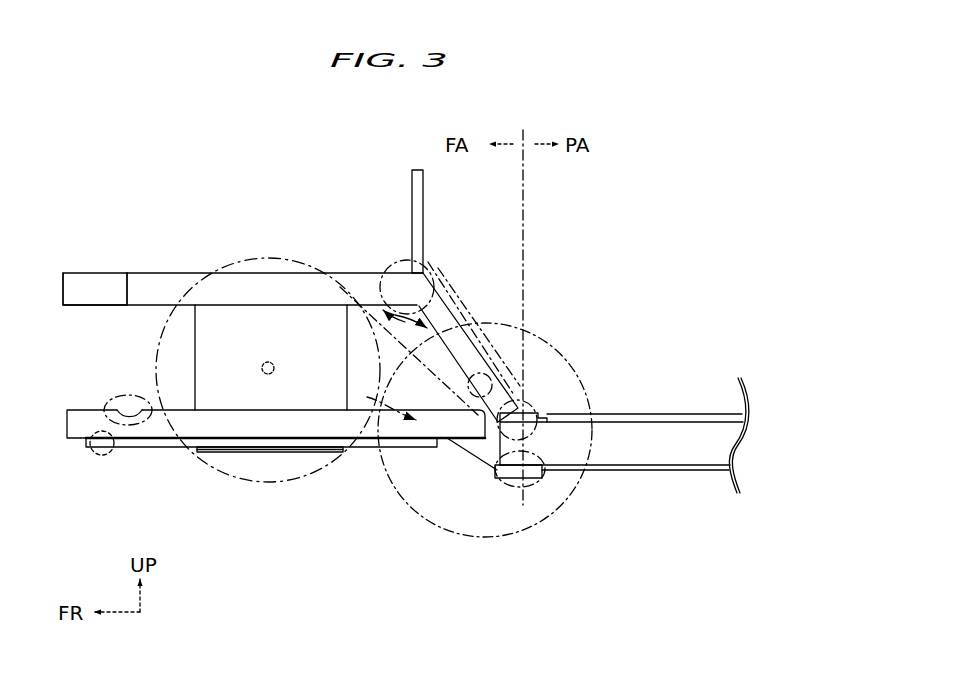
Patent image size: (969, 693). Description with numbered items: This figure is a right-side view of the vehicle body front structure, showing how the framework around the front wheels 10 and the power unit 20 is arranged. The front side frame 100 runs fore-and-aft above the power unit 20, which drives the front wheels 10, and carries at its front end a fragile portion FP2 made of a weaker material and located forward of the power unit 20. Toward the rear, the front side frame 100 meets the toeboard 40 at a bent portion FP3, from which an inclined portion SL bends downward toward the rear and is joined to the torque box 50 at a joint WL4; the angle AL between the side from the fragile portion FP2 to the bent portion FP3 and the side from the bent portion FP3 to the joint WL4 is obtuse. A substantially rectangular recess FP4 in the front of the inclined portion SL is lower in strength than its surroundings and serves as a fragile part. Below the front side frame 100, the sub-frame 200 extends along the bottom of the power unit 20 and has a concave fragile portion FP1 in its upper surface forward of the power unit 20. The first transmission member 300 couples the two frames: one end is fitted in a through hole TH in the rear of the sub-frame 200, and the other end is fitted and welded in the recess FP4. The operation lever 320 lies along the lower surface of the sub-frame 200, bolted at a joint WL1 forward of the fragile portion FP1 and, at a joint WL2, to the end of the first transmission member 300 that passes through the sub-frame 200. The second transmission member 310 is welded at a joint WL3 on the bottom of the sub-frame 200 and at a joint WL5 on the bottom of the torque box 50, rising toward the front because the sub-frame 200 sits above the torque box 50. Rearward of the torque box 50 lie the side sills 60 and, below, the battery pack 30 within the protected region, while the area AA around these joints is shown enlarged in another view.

The front wheels 10 is at (213, 272).
The front side frame 100 is at (160, 295).
The power unit 20 is at (282, 328).
The toeboard 40 is at (412, 176).
The sub-frame 200 is at (157, 428).
The first transmission member 300 is at (423, 441).
The second transmission member 310 is at (472, 452).
The operation lever 320 is at (348, 449).
The torque box 50 is at (530, 417).
The side sill 60 is at (633, 435).
The battery pack 30 is at (668, 470).
The area AA is at (522, 536).
The inclined portion SL is at (404, 262).
The fragile portion FP1 is at (100, 397).
The fragile portion FP2 is at (84, 276).
The bent portion FP3 is at (435, 287).
The recess FP4 is at (498, 370).
The joint WL1 is at (90, 463).
The joint WL2 is at (410, 454).
The joint WL3 is at (445, 462).
The joint WL4 is at (542, 397).
The joint WL5 is at (548, 484).
The angle AL is at (393, 333).
The through hole TH is at (367, 397).